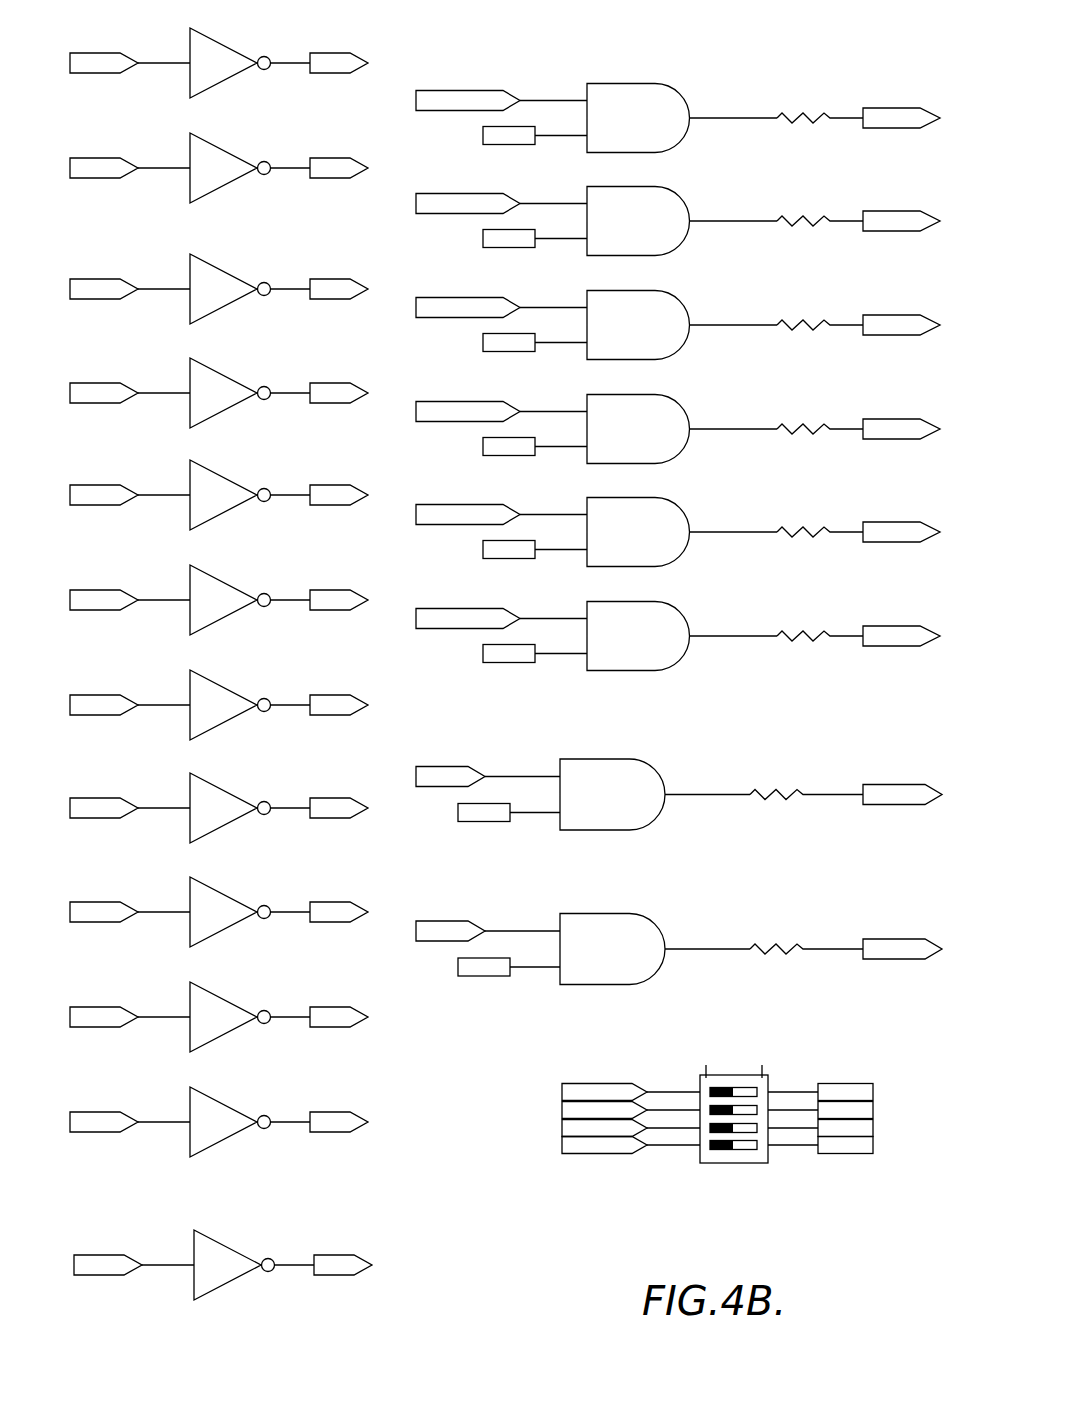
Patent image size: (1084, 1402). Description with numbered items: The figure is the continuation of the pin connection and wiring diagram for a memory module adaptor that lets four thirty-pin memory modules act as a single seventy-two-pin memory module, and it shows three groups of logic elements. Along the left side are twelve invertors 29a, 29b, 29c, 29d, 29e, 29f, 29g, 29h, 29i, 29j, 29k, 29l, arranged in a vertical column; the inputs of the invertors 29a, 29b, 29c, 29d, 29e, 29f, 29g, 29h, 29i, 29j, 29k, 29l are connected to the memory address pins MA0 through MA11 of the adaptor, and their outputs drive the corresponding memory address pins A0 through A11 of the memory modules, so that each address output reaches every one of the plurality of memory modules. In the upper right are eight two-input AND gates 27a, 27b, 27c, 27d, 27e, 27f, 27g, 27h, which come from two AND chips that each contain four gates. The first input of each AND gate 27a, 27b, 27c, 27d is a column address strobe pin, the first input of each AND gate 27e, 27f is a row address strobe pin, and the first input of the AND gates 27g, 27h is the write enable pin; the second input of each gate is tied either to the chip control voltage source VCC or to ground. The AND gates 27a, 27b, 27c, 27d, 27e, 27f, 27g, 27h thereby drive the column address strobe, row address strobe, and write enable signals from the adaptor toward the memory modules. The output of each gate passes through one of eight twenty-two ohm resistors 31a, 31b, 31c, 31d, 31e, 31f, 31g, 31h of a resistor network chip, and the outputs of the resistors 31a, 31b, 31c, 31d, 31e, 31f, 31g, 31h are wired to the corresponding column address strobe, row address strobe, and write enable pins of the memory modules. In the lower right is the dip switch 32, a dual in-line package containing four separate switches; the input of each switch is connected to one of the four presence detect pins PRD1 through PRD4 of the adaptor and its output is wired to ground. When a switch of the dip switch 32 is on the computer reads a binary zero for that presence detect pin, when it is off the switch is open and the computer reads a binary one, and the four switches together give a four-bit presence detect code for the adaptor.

The invertor 29a is at (223, 53).
The invertor 29b is at (216, 155).
The invertor 29c is at (215, 276).
The invertor 29d is at (230, 386).
The invertor 29e is at (212, 475).
The invertor 29f is at (230, 588).
The invertor 29g is at (220, 693).
The invertor 29h is at (223, 798).
The invertor 29i is at (222, 902).
The invertor 29j is at (218, 1008).
The invertor 29k is at (220, 1112).
The invertor 29l is at (220, 1253).
The AND gate 27a is at (670, 103).
The AND gate 27b is at (677, 211).
The AND gate 27c is at (665, 306).
The AND gate 27d is at (675, 411).
The AND gate 27e is at (667, 513).
The AND gate 27f is at (667, 619).
The AND gate 27g is at (627, 768).
The AND gate 27h is at (643, 933).
The resistor 31a is at (810, 113).
The resistor 31b is at (815, 217).
The resistor 31c is at (808, 316).
The resistor 31d is at (808, 424).
The resistor 31e is at (797, 530).
The resistor 31f is at (802, 637).
The resistor 31g is at (783, 793).
The resistor 31h is at (777, 947).
The dip switch 32 is at (730, 1162).